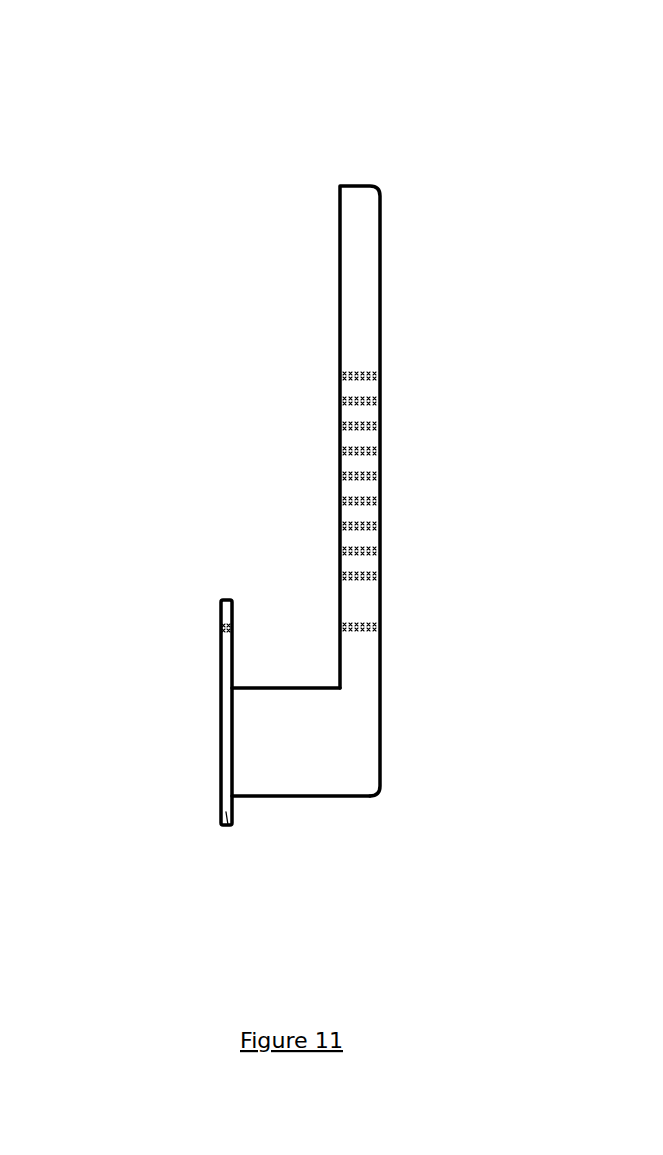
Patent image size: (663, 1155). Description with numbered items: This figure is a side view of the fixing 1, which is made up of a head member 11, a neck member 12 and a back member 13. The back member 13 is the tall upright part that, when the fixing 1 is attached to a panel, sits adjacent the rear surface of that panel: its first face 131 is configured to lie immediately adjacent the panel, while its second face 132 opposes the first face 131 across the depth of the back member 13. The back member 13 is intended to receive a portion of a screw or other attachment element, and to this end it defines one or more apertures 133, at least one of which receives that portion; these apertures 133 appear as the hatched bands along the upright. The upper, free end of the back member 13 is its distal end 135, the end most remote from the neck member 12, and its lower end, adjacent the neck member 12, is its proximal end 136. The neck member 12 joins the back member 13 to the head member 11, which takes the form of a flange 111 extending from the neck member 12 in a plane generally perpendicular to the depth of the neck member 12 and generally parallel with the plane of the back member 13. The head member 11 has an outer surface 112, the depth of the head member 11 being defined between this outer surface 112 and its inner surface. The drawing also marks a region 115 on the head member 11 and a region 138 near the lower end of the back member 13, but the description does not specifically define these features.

The fixing 1 is at (138, 361).
The head member 11 is at (227, 723).
The flange 111 is at (230, 813).
The outer surface 112 is at (218, 660).
The attachment region of base plate 115 is at (223, 632).
The neck member 12 is at (307, 705).
The back member 13 is at (368, 254).
The first face 131 is at (340, 298).
The second face 132 is at (376, 308).
The apertures 133 is at (394, 371).
The distal end 135 is at (356, 160).
The proximal end 136 is at (408, 830).
The lower end of gripping section 138 is at (363, 632).